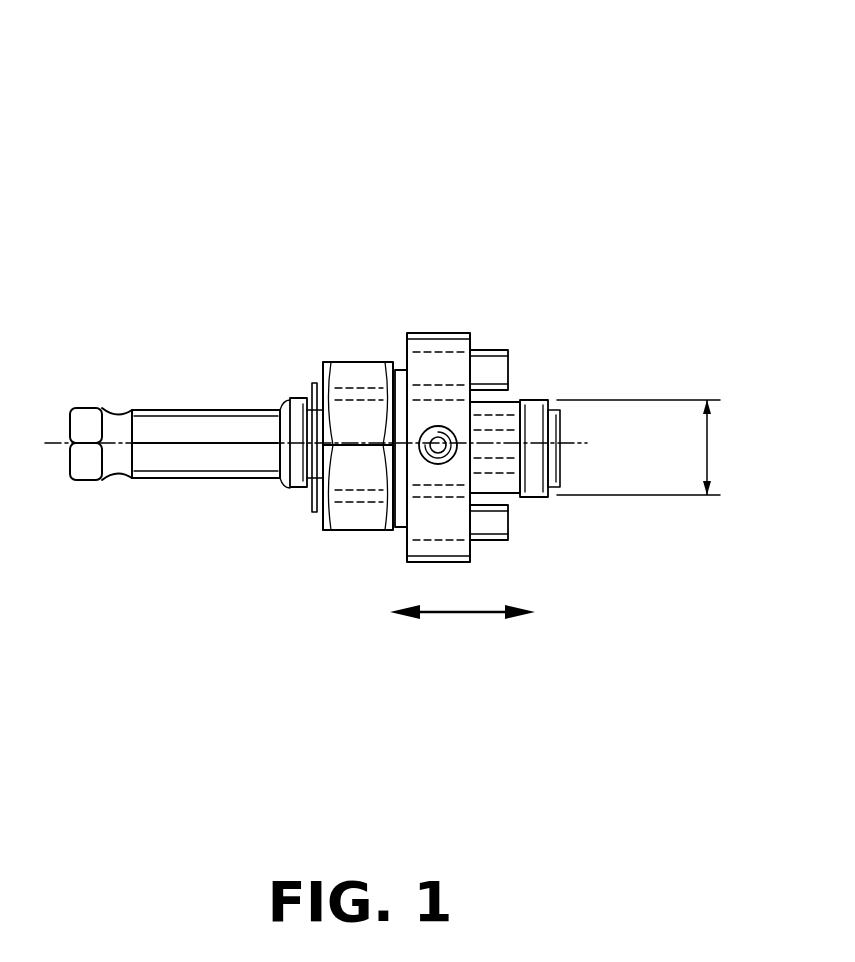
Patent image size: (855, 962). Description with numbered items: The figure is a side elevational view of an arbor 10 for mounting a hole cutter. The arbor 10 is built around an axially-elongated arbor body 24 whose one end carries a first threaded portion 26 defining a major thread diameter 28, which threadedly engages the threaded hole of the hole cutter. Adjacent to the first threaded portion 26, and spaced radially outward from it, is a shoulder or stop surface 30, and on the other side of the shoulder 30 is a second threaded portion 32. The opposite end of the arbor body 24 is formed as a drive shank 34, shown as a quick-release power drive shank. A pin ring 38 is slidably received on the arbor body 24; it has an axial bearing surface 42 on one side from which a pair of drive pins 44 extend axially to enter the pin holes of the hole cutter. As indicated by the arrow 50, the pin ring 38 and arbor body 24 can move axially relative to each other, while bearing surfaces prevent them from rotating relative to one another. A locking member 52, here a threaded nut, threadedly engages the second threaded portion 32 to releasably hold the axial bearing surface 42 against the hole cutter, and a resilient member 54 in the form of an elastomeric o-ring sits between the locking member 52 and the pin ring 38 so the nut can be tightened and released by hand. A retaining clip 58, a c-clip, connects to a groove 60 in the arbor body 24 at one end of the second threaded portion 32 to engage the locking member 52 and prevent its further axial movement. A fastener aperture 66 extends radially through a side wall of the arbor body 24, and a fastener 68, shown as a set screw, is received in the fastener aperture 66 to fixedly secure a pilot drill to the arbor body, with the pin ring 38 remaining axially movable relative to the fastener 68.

The arbor 10 is at (202, 133).
The arbor body 24 is at (149, 402).
The first threaded portion 26 is at (537, 498).
The major thread diameter 28 is at (708, 449).
The shoulder 30 is at (511, 401).
The second threaded portion 32 is at (337, 535).
The drive shank 34 is at (148, 480).
The pin ring 38 is at (463, 330).
The axial bearing surface 42 is at (473, 340).
The drive pins 44 is at (506, 351).
The arrow 50 is at (462, 616).
The locking member 52 is at (340, 362).
The resilient member 54 is at (401, 368).
The retaining clip 58 is at (312, 385).
The groove 60 is at (300, 494).
The fastener aperture 66 is at (433, 465).
The fastener 68 is at (435, 426).